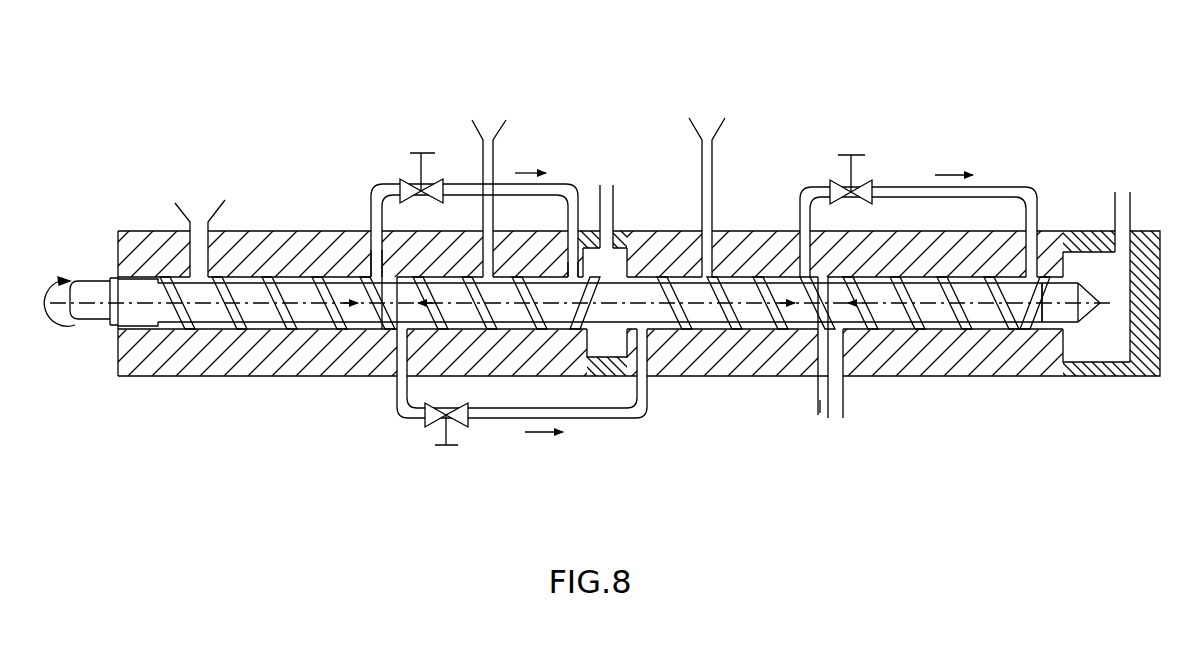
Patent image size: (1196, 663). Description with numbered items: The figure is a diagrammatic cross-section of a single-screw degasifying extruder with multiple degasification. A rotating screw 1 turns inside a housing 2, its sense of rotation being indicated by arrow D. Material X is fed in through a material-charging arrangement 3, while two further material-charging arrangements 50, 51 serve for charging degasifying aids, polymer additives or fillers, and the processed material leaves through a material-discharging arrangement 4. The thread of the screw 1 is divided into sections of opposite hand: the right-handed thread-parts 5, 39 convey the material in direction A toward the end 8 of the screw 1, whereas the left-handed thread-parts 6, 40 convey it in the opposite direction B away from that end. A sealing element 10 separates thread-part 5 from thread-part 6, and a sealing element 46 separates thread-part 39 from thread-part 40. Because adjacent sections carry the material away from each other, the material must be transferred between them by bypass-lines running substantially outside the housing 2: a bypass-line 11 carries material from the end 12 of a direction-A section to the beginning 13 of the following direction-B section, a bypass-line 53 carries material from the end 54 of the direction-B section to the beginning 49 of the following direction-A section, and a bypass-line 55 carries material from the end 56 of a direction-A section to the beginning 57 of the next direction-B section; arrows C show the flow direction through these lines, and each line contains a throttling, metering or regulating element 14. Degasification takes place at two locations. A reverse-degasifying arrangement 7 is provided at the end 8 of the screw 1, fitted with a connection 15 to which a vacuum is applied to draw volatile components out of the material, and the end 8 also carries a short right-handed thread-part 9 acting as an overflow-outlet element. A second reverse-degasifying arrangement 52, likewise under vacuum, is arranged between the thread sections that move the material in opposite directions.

The rotating screw 1 is at (582, 297).
The housing 2 is at (255, 233).
The material-charging arrangement 3 is at (198, 222).
The material-discharging arrangement 4 is at (837, 418).
The right-handed thread-part 5 is at (279, 325).
The left-handed thread-part 6 is at (500, 322).
The reverse-degasifying arrangement 7 is at (1155, 260).
The end of screw 8 is at (1078, 285).
The short right-handed thread-part 9 is at (1050, 312).
The sealing element 10 is at (390, 308).
The bypass-line 11 is at (382, 192).
The end of section 12 is at (385, 305).
The beginning of section 13 is at (580, 265).
The throttling, metering or regulating element 14 is at (440, 173).
The connection 15 is at (1123, 200).
The right-handed thread-part 39 is at (668, 322).
The left-handed thread-part 40 is at (962, 345).
The sealing element 46 is at (820, 413).
The beginning of section 49 is at (638, 320).
The material-charging arrangement 50 is at (490, 130).
The material-charging arrangement 51 is at (706, 130).
The reverse-degasifying arrangement 52 is at (604, 186).
The bypass-line 53 is at (407, 420).
The end of section 54 is at (390, 300).
The bypass-line 55 is at (813, 188).
The end of section 56 is at (808, 318).
The beginning of section 57 is at (1040, 308).
The direction arrow A is at (348, 310).
The direction arrow B is at (430, 305).
The direction arrow C is at (535, 173).
The rotation arrow D is at (57, 330).